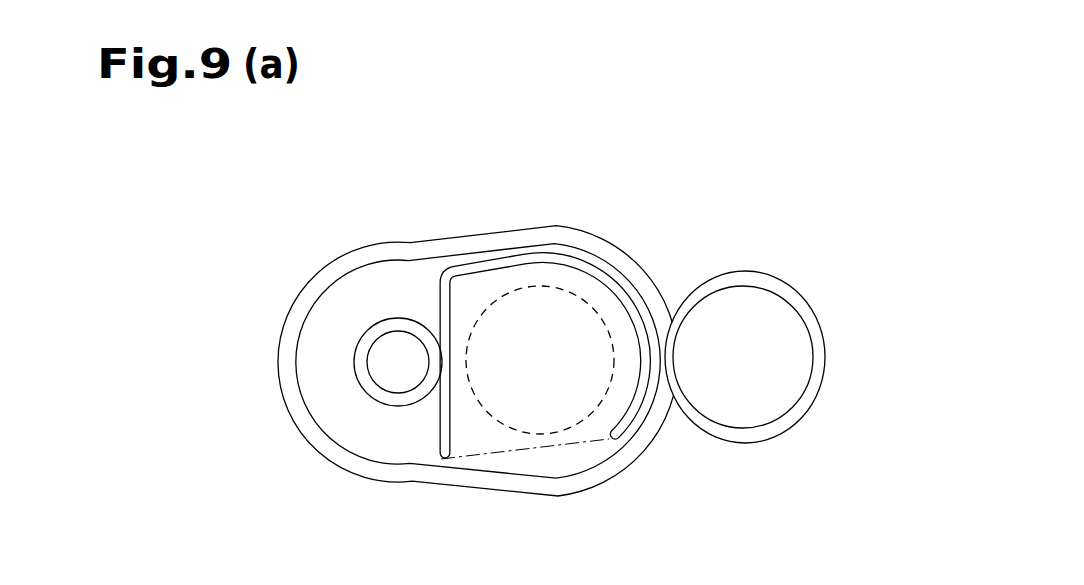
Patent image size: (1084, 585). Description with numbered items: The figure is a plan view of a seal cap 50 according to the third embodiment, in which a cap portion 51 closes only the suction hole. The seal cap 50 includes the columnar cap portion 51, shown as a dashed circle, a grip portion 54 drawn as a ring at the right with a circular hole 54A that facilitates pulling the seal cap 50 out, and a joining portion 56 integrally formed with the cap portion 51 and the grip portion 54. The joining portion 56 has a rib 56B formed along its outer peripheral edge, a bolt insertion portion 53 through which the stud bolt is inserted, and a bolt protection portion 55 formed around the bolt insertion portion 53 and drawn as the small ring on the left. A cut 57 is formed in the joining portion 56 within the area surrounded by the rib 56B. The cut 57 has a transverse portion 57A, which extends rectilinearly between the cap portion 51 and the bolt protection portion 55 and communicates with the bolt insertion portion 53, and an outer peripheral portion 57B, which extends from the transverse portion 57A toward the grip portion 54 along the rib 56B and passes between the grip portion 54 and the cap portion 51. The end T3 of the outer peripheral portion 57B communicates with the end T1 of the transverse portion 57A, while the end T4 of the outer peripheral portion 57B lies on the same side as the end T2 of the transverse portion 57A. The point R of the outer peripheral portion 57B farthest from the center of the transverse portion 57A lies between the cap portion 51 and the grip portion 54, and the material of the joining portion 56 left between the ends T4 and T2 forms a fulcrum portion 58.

The seal cap 50 is at (712, 222).
The cap portion 51 is at (593, 302).
The bolt insertion portion 53 is at (388, 373).
The grip portion 54 is at (749, 444).
The circular hole 54A is at (733, 388).
The bolt protection portion 55 is at (387, 317).
The joining portion 56 is at (397, 433).
The rib 56B is at (296, 300).
The cut 57 is at (593, 152).
The transverse portion 57A is at (484, 268).
The outer peripheral portion 57B is at (578, 258).
The fulcrum portion 58 is at (556, 449).
The furthest point R is at (656, 355).
The end of transverse portion T1 is at (424, 227).
The end of outer peripheral portion T3 is at (443, 270).
The end of transverse portion T2 is at (445, 463).
The end of outer peripheral portion T4 is at (616, 437).